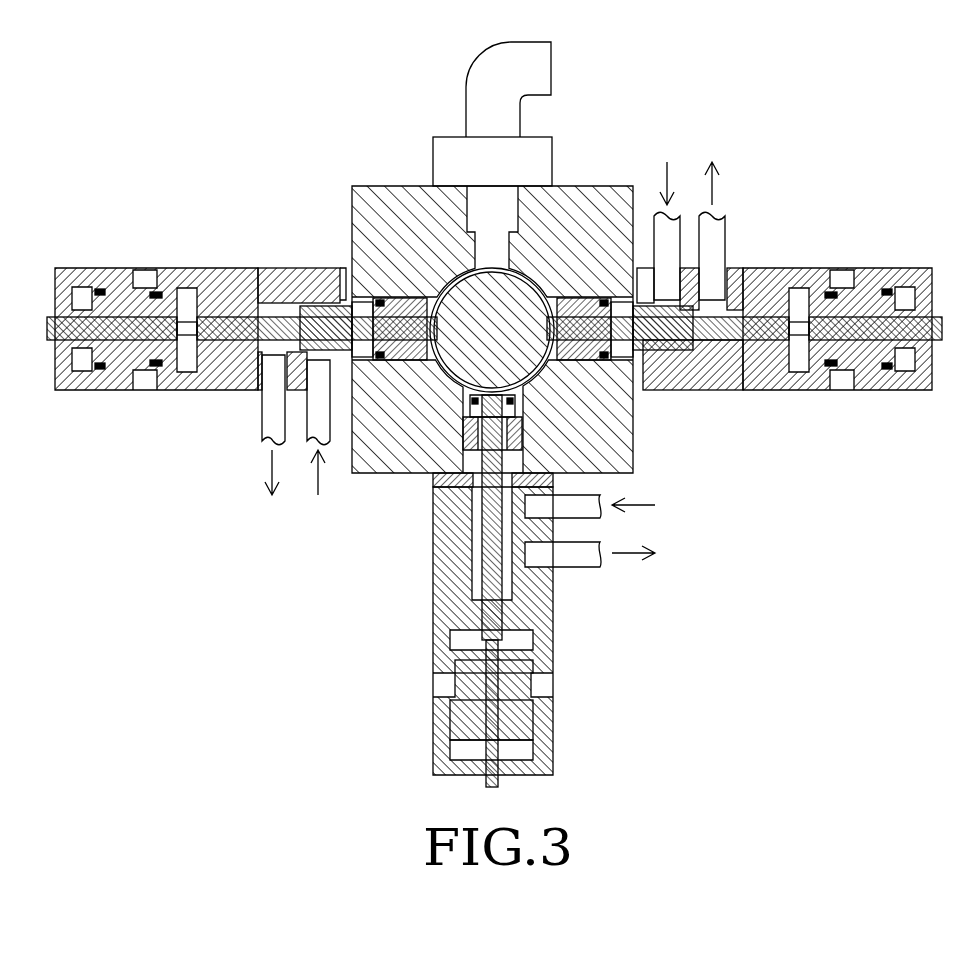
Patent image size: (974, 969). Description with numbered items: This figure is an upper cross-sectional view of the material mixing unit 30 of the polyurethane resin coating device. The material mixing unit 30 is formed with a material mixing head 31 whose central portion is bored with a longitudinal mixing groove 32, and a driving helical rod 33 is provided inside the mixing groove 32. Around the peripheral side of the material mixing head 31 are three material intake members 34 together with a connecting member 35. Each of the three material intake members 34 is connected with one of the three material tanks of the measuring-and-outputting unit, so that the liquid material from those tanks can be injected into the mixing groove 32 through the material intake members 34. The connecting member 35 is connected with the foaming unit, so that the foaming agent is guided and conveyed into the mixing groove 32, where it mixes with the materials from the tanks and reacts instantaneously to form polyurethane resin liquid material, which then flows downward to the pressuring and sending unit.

The material mixing unit 30 is at (494, 414).
The material mixing head 31 is at (619, 190).
The mixing groove 32 is at (458, 392).
The driving helical rod 33 is at (452, 367).
The material intake member 34 is at (197, 268).
The connecting member 35 is at (543, 145).